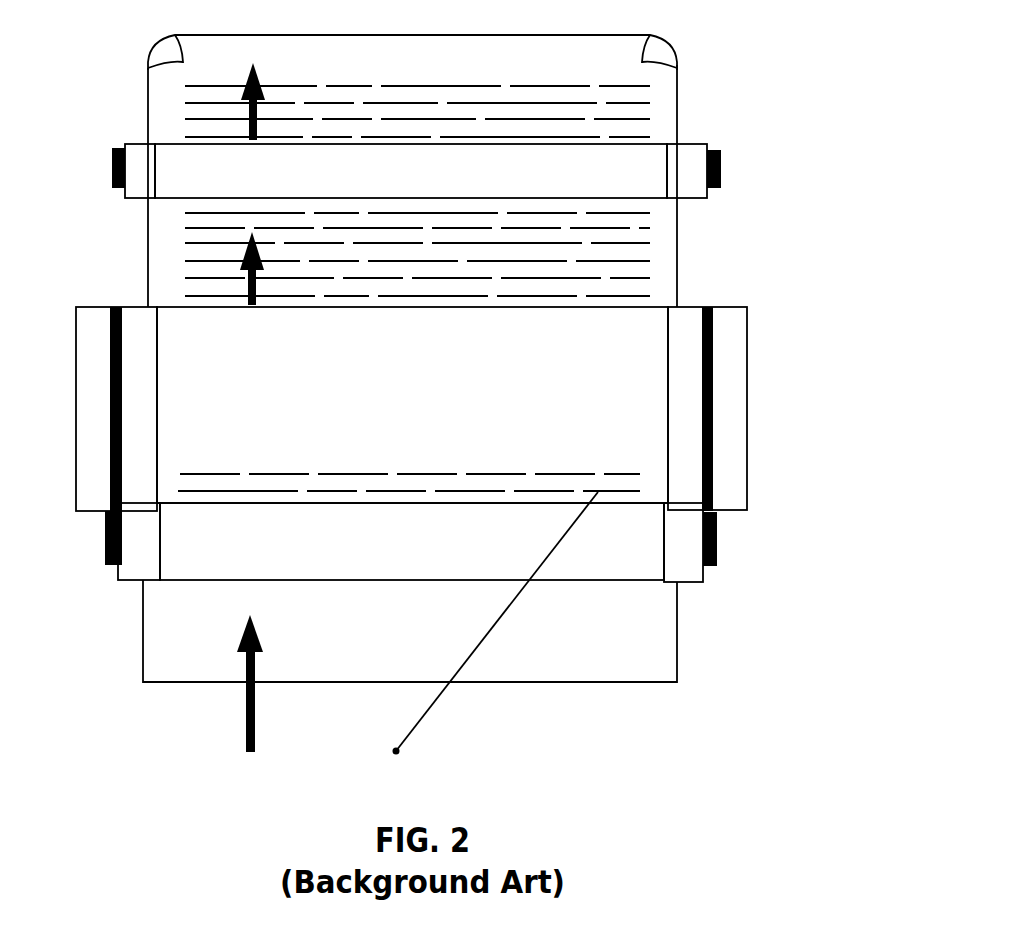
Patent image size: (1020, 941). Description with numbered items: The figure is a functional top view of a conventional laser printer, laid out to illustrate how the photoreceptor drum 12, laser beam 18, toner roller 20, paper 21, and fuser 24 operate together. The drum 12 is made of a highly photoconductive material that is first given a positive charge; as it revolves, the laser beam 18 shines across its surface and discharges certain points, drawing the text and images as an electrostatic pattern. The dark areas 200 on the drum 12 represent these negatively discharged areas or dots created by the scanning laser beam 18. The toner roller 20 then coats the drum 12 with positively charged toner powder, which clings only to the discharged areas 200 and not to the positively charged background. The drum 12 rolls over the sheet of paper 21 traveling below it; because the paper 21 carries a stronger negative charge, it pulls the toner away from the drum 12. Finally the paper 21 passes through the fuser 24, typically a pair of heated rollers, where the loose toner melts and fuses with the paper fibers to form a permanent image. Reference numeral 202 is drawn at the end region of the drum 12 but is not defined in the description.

The photoreceptor drum 12 is at (717, 426).
The laser beam 18 is at (435, 705).
The toner roller 20 is at (720, 538).
The sheet of paper 21 is at (667, 631).
The fuser 24 is at (727, 171).
The dark areas 200 is at (213, 473).
The drum end region 202 is at (77, 409).